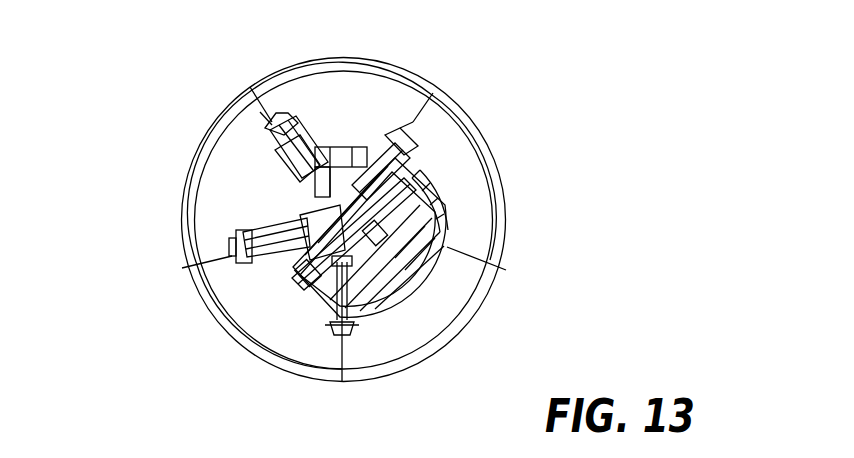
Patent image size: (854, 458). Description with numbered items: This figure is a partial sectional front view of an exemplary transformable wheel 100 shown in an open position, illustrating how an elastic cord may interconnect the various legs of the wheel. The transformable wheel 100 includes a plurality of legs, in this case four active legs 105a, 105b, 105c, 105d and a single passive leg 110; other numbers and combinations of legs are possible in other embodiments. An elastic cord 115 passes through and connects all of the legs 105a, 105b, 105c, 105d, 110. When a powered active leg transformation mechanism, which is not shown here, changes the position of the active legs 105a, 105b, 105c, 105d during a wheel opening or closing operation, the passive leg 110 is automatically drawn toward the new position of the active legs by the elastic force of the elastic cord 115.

The transformable wheel 100 is at (121, 67).
The active leg 105a is at (258, 317).
The active leg 105b is at (218, 194).
The active leg 105c is at (348, 102).
The active leg 105d is at (450, 172).
The passive leg 110 is at (423, 320).
The elastic cord 115 is at (440, 220).